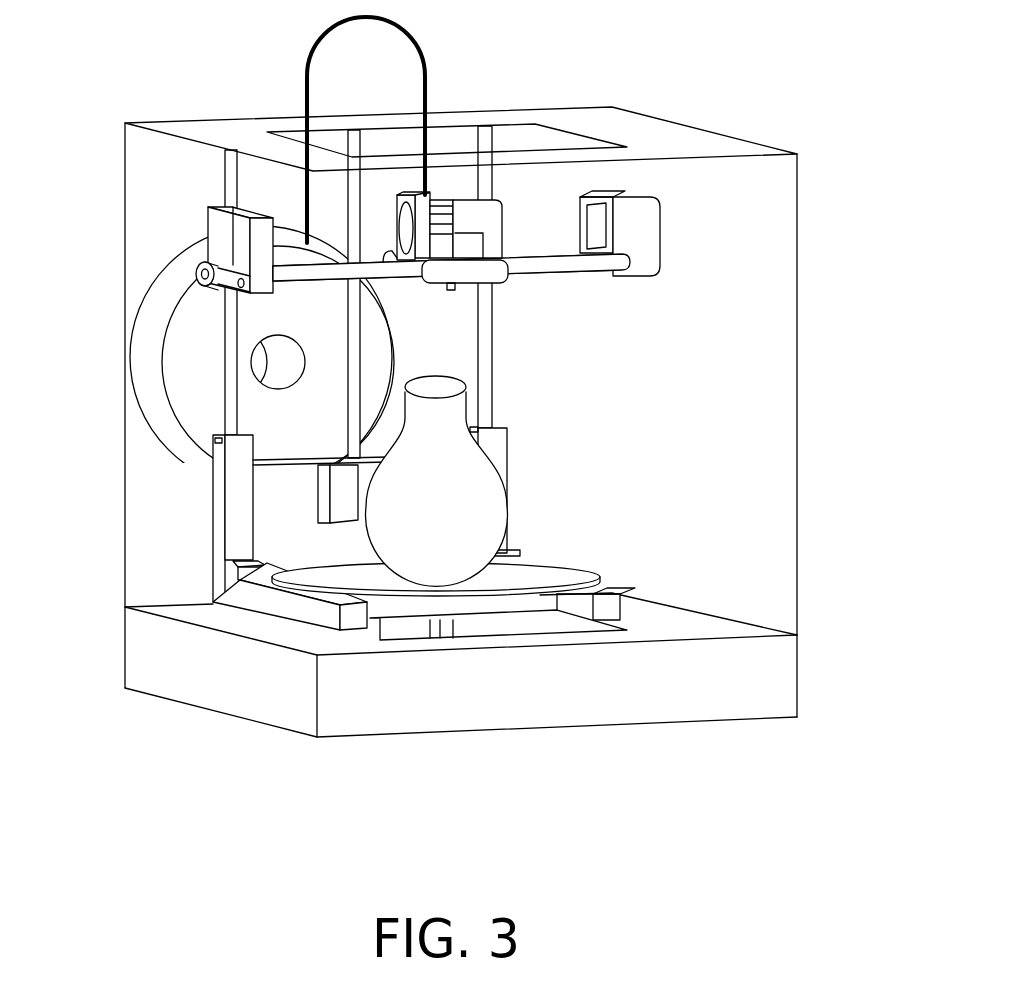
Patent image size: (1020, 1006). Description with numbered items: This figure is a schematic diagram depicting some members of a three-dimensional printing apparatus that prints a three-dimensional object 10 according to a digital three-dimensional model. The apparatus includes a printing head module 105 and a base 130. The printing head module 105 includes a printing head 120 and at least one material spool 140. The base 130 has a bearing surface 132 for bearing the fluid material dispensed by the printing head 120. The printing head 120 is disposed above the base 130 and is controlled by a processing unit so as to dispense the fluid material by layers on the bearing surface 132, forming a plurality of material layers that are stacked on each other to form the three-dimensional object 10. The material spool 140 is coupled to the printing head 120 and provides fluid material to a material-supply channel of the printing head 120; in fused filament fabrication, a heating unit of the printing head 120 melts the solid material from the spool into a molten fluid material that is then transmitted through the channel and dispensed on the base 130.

The 3-D object 10 is at (400, 505).
The printing head module 105 is at (597, 178).
The printing head 120 is at (478, 217).
The base 130 is at (571, 571).
The bearing surface 132 is at (536, 556).
The material spool 140 is at (412, 130).